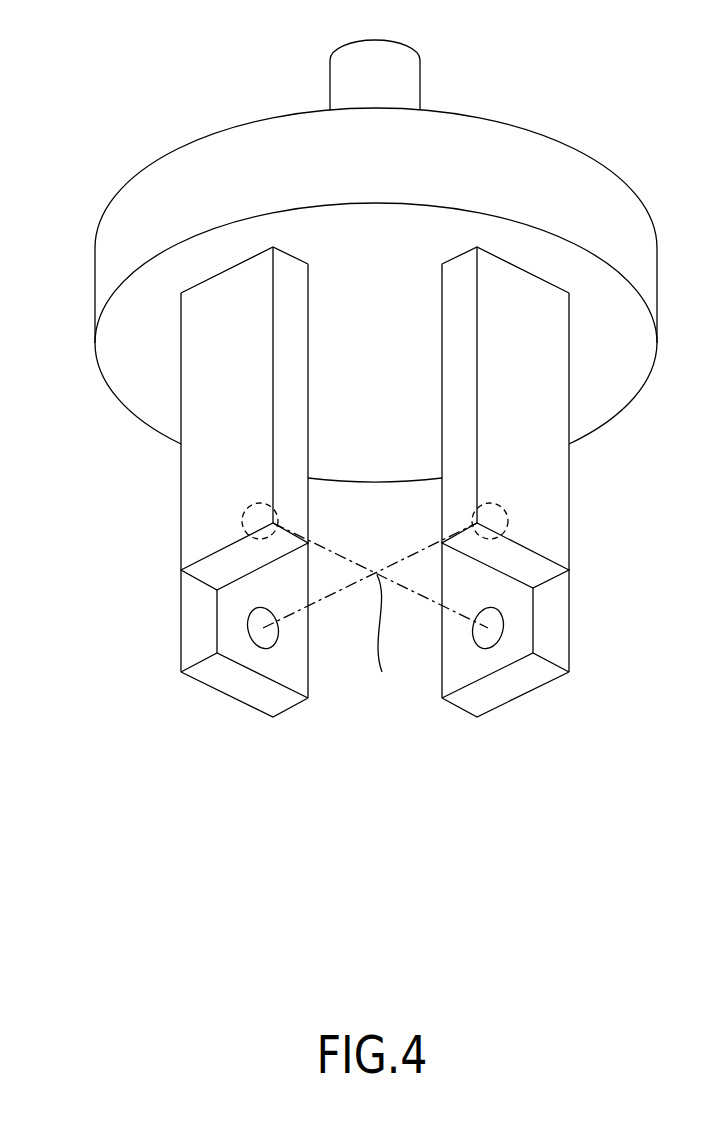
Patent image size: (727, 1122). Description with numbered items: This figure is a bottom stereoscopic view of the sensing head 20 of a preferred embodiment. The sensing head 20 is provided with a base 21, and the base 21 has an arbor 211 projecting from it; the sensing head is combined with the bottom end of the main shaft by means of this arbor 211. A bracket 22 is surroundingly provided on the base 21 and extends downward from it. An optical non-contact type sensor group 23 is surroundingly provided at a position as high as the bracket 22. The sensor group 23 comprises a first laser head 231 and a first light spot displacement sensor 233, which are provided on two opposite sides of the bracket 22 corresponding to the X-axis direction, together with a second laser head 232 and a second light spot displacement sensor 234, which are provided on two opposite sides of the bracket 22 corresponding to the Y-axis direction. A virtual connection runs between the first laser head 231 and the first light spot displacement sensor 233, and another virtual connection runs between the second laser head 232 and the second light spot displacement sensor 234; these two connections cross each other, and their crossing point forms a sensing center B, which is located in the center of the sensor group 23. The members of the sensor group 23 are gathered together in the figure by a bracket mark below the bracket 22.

The sensing head 20 is at (160, 105).
The base 21 is at (575, 163).
The arbor 211 is at (402, 63).
The bracket 22 is at (203, 370).
The optical non-contact type sensor group 23 is at (369, 682).
The first laser head 231 is at (275, 648).
The second laser head 232 is at (475, 652).
The first light spot displacement sensor 233 is at (500, 540).
The second light spot displacement sensor 234 is at (250, 540).